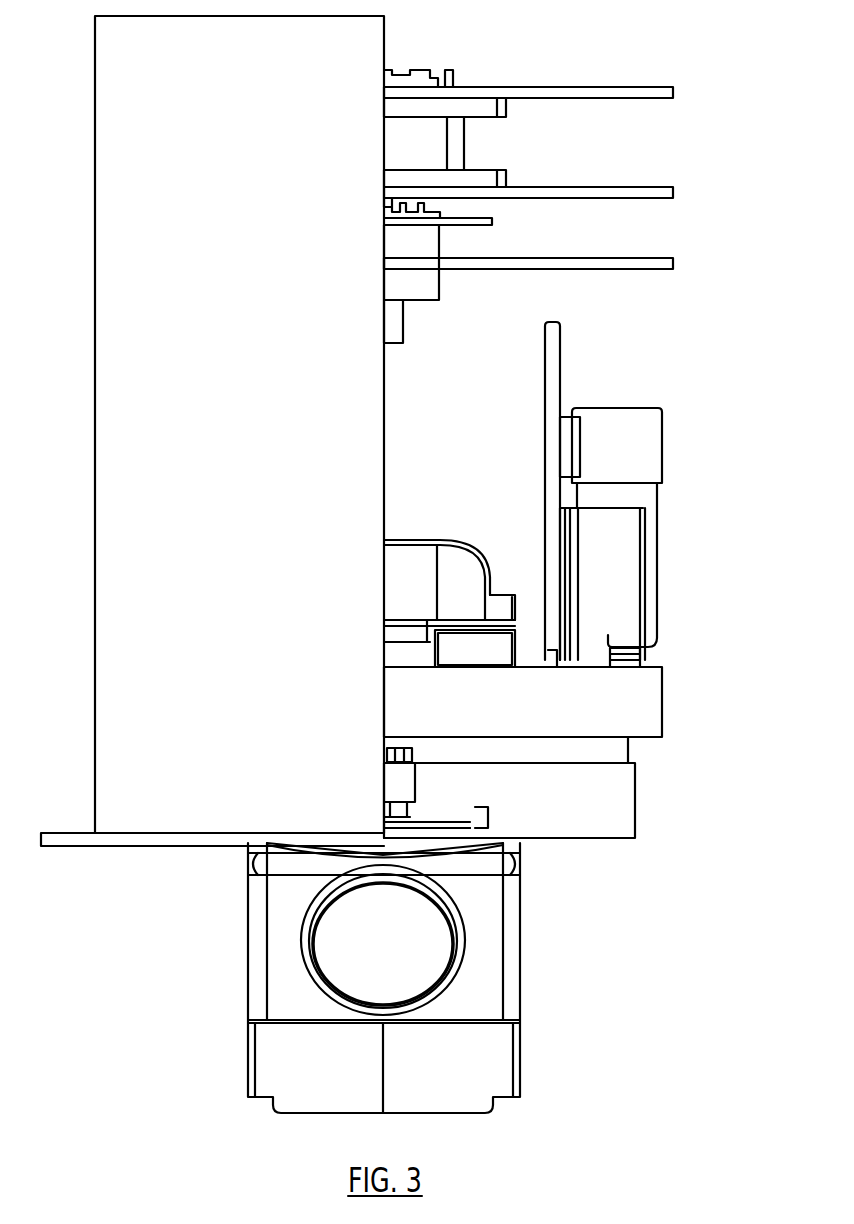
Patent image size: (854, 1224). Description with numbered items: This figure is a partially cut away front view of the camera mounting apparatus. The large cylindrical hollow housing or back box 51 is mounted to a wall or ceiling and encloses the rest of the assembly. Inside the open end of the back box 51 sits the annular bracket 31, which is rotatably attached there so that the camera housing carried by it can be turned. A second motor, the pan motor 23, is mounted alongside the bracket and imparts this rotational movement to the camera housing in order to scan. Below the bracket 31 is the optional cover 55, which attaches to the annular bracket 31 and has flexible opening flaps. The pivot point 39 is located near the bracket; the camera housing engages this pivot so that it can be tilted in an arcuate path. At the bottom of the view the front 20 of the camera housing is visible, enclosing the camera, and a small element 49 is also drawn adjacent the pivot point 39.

The cylindrical hollow housing 51 is at (133, 723).
The pan motor 23 is at (645, 495).
The annular bracket 31 is at (652, 702).
The cover 55 is at (595, 797).
The pivot point 39 is at (392, 753).
The connector 49 is at (397, 782).
The front 20 is at (312, 913).